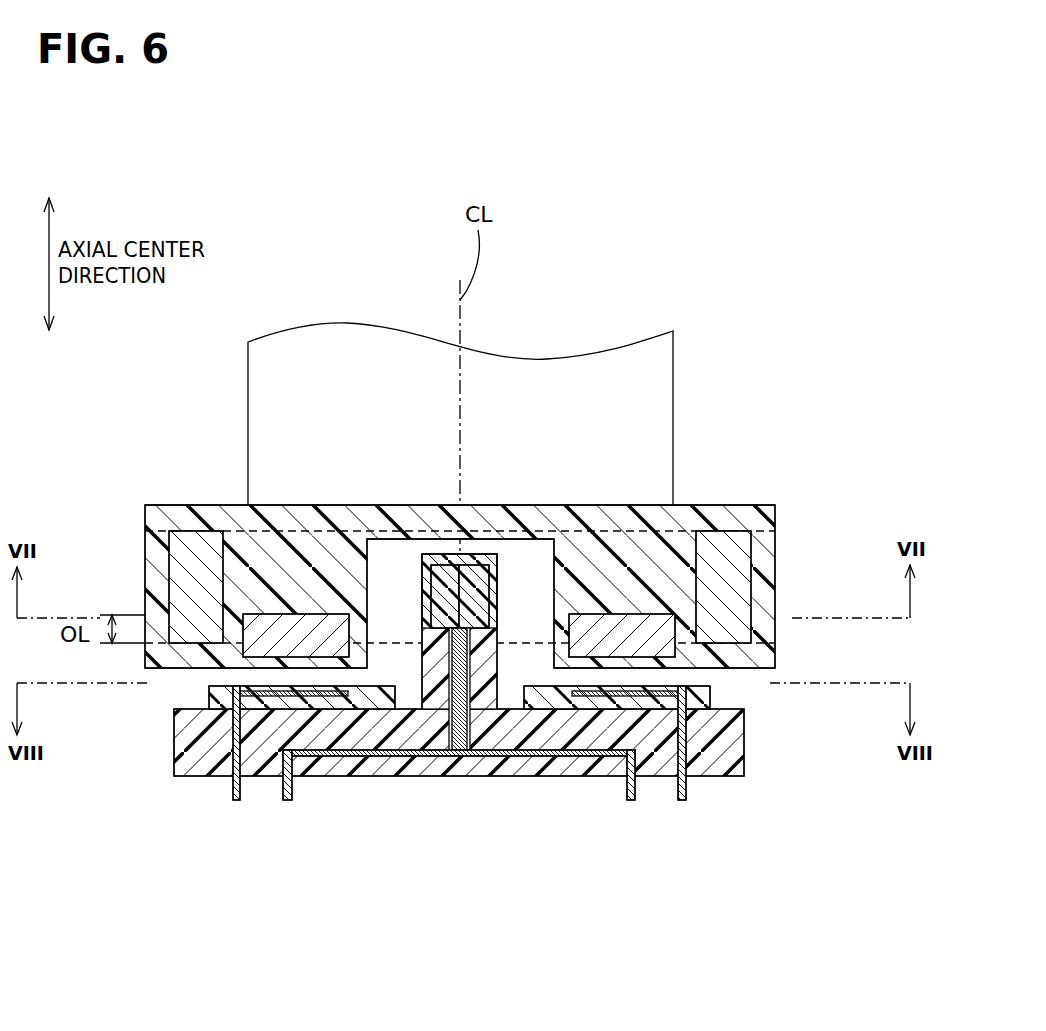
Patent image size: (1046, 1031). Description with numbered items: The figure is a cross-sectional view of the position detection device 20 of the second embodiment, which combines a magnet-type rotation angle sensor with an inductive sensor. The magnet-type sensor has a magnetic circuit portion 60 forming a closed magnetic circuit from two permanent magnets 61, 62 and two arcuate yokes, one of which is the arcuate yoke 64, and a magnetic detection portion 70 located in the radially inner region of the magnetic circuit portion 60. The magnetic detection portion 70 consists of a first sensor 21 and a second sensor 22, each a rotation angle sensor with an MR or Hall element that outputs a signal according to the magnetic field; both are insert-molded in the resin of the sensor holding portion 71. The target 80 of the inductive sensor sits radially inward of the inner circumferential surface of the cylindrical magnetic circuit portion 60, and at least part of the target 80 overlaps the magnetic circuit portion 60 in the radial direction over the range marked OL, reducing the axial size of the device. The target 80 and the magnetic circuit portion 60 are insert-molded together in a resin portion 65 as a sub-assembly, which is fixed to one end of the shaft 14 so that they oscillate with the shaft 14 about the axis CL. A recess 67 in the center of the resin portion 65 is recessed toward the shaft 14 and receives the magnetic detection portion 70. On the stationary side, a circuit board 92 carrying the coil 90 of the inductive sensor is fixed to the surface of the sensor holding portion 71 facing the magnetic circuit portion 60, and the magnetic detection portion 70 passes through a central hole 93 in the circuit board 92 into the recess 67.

The shaft 14 is at (612, 385).
The position detection device 20 is at (496, 599).
The first sensor 21 is at (442, 572).
The second sensor 22 is at (478, 573).
The magnetic circuit portion 60 is at (496, 471).
The permanent magnet 61 is at (190, 537).
The permanent magnet 62 is at (737, 562).
The arcuate yoke 64 is at (280, 518).
The resin portion 65 is at (317, 510).
The recess 67 is at (367, 597).
The magnetic detection portion 70 is at (459, 493).
The sensor holding portion 71 is at (347, 772).
The target 80 is at (617, 623).
The coil 90 is at (660, 696).
The circuit board 92 is at (270, 703).
The hole 93 is at (512, 696).